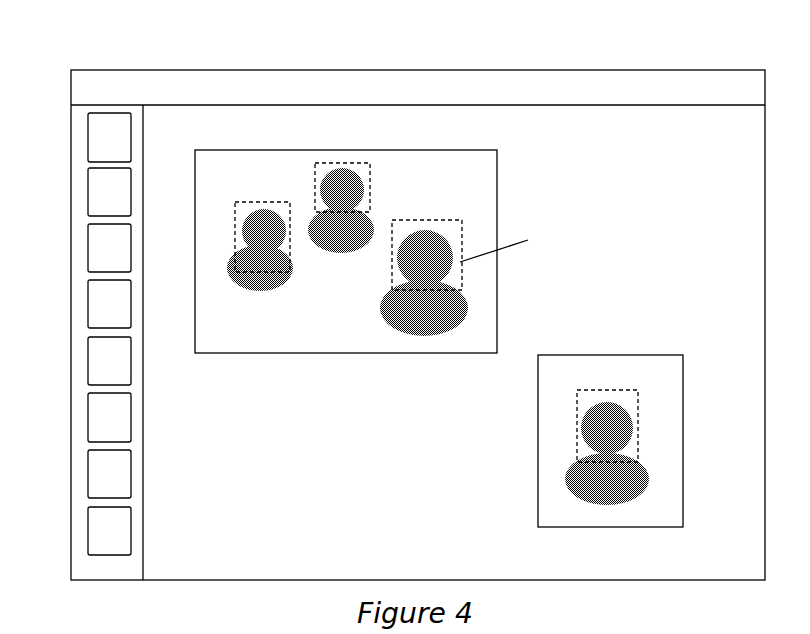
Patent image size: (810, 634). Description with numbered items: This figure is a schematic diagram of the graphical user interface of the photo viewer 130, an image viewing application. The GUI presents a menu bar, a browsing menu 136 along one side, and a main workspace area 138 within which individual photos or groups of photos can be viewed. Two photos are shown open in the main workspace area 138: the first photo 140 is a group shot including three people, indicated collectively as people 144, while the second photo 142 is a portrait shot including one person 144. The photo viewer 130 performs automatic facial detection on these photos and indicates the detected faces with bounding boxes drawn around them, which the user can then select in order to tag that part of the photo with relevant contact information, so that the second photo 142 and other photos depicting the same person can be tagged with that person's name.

The photo viewer 130 is at (583, 70).
The browsing menu 136 is at (82, 168).
The main workspace area 138 is at (441, 342).
The first photo 140 is at (361, 251).
The second photo 142 is at (610, 441).
The people 144 is at (573, 458).